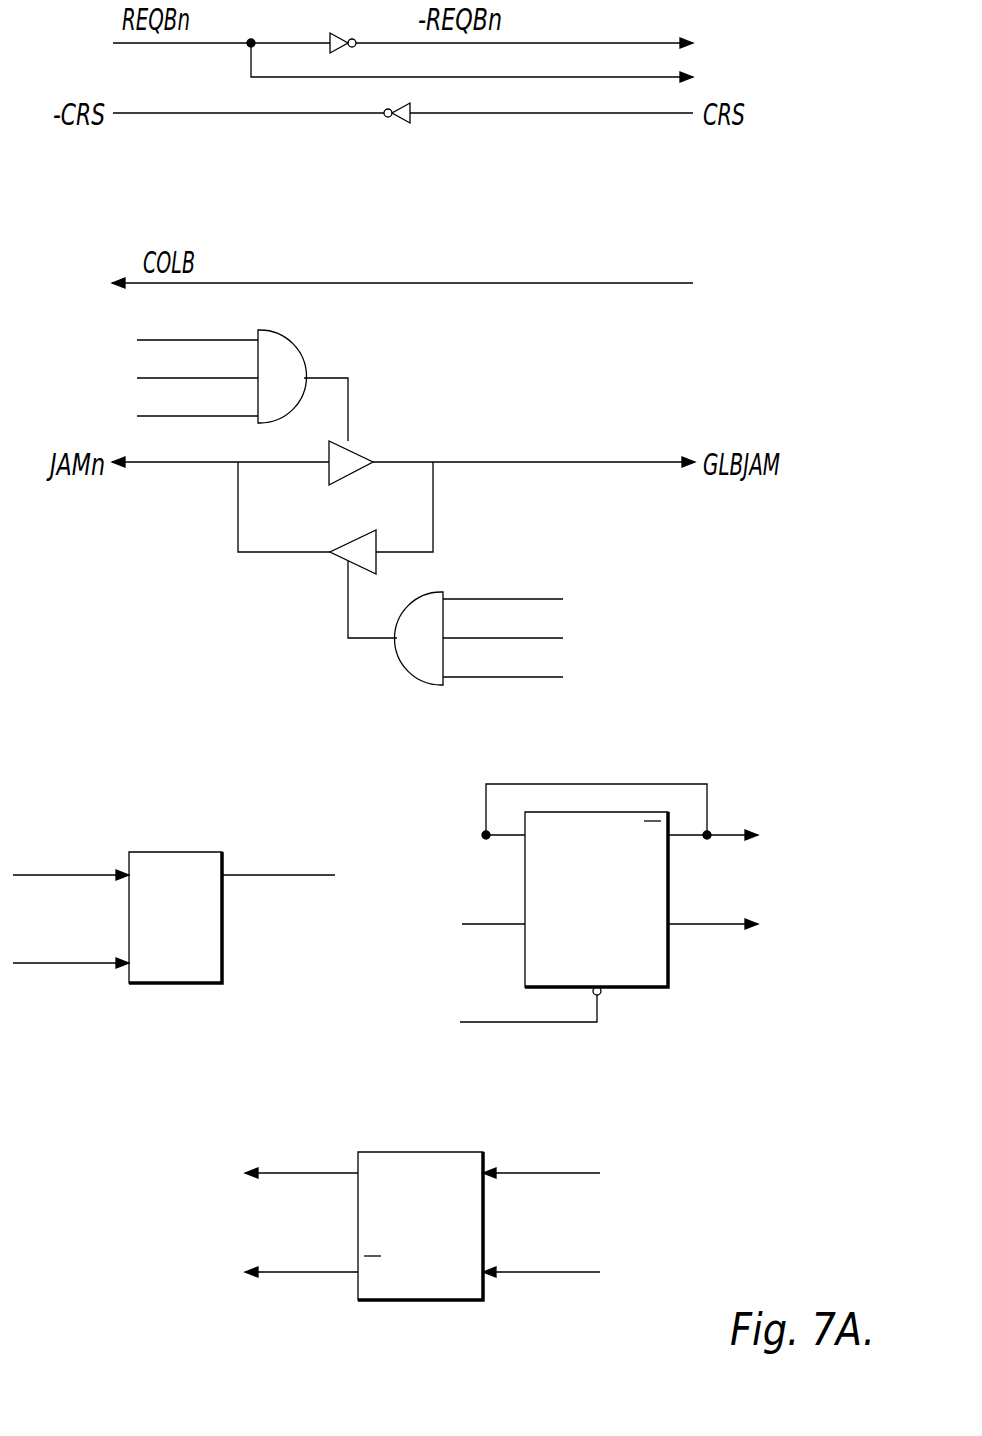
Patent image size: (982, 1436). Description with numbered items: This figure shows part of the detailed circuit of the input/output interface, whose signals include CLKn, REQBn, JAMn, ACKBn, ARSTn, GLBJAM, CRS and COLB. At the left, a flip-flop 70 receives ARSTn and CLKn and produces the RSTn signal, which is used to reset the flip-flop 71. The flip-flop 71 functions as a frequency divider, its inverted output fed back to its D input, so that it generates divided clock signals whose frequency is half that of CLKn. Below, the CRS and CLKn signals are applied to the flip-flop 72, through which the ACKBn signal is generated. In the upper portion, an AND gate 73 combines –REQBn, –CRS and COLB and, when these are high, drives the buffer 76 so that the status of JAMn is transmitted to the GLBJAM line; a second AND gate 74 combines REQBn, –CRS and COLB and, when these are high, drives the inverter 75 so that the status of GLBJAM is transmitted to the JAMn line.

The reset synchronizing flip-flop 70 is at (204, 984).
The flip-flop 71 is at (650, 988).
The flip-flop 72 is at (465, 1301).
The AND gate 73 is at (292, 338).
The AND gate 74 is at (407, 673).
The inverter 75 is at (347, 530).
The buffer 76 is at (371, 442).